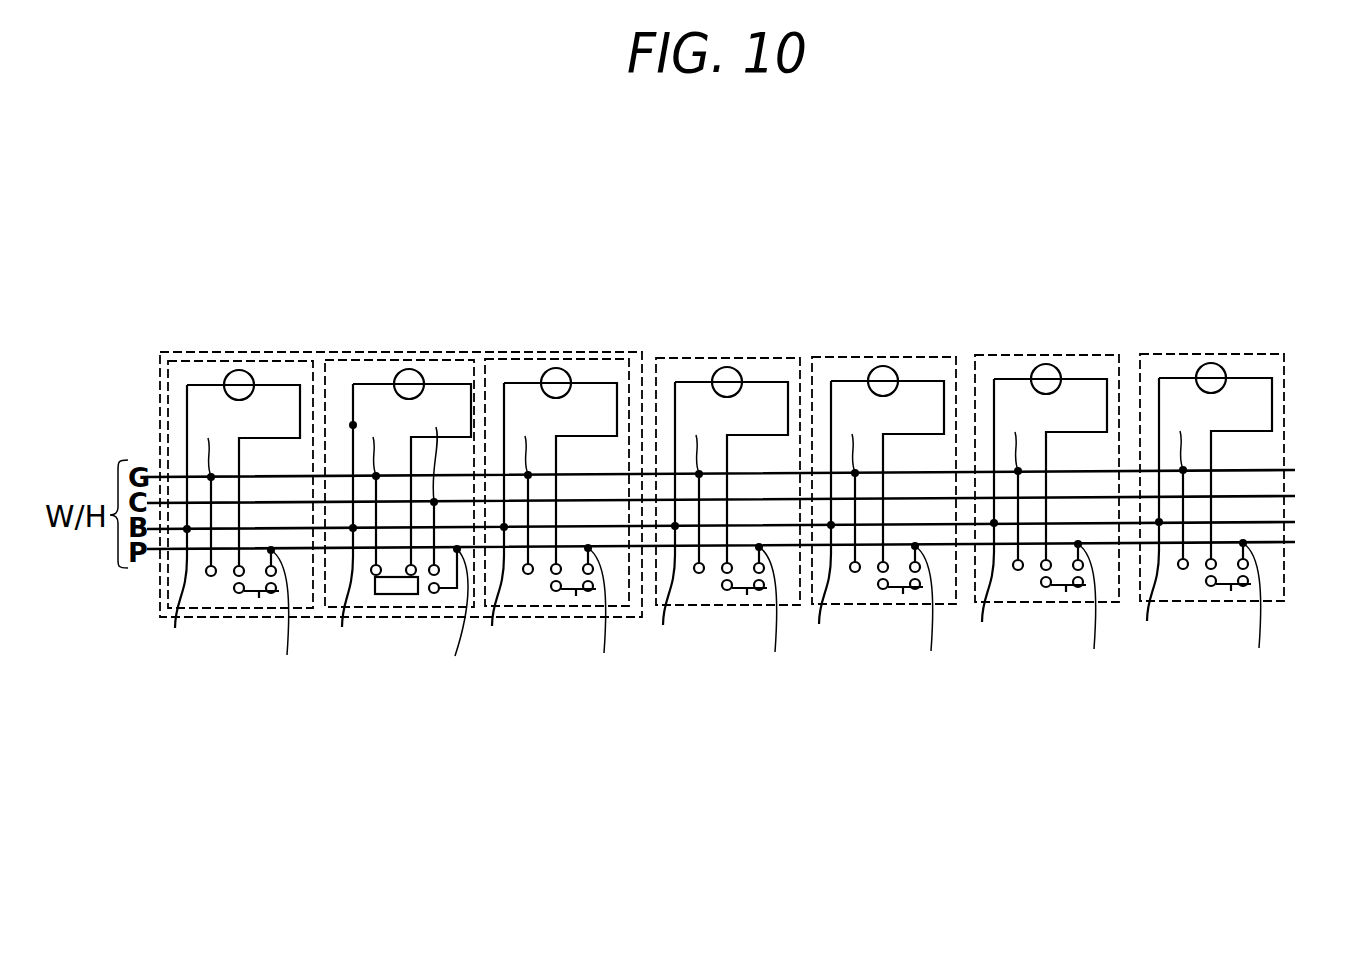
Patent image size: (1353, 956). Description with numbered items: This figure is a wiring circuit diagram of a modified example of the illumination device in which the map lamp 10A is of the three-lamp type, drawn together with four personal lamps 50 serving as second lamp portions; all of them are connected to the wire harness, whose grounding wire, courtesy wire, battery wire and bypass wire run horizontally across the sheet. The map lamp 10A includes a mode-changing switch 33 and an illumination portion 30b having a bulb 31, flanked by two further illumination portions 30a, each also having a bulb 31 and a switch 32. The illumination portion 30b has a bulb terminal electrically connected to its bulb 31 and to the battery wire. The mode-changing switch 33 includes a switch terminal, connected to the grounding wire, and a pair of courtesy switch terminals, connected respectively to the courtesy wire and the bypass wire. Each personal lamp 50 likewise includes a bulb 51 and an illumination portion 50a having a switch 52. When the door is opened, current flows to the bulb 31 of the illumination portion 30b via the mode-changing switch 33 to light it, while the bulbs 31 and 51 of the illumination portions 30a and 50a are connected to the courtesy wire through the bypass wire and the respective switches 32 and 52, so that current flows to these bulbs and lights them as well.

The map lamp 10A is at (499, 350).
The illumination portion 30a is at (278, 355).
The illumination portion 30b is at (440, 357).
The bulb 31 is at (239, 370).
The switch 32 is at (247, 598).
The mode-changing switch 33 is at (400, 598).
The personal lamp 50 is at (754, 355).
The illumination portion 50a is at (777, 357).
The bulb 51 is at (727, 367).
The switch 52 is at (735, 595).